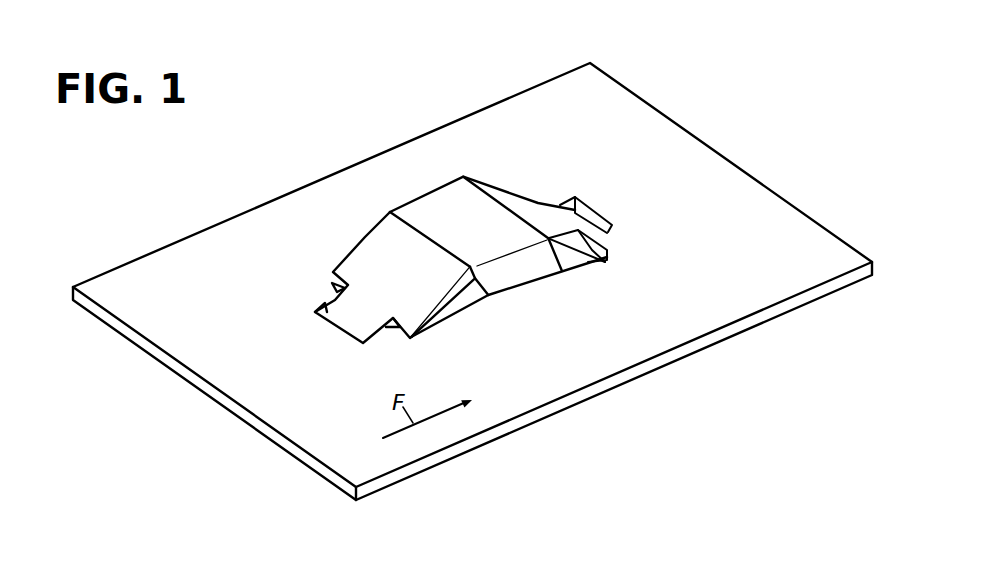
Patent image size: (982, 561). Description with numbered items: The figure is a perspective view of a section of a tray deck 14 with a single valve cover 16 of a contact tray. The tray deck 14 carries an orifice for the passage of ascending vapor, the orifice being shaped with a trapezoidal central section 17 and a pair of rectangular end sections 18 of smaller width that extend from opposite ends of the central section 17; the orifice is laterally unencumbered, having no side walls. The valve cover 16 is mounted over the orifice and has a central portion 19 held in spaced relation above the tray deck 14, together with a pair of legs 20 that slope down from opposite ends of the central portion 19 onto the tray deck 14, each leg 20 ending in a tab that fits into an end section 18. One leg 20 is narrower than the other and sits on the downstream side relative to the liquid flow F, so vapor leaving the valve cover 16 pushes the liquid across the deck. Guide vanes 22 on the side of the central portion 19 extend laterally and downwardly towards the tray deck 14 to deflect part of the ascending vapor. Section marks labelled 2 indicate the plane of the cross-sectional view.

The tray deck 14 is at (223, 237).
The valve cover 16 is at (461, 190).
The central section 17 is at (510, 288).
The end sections 18 is at (598, 222).
The central portion 19 is at (427, 210).
The legs 20 is at (357, 267).
The guide vanes 22 is at (528, 265).
The section line 2- 2 is at (807, 178).